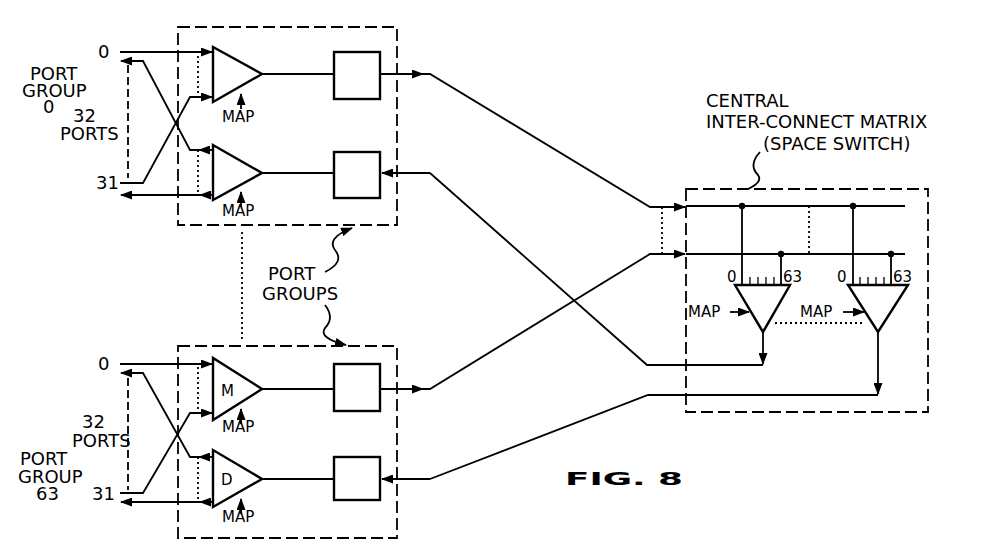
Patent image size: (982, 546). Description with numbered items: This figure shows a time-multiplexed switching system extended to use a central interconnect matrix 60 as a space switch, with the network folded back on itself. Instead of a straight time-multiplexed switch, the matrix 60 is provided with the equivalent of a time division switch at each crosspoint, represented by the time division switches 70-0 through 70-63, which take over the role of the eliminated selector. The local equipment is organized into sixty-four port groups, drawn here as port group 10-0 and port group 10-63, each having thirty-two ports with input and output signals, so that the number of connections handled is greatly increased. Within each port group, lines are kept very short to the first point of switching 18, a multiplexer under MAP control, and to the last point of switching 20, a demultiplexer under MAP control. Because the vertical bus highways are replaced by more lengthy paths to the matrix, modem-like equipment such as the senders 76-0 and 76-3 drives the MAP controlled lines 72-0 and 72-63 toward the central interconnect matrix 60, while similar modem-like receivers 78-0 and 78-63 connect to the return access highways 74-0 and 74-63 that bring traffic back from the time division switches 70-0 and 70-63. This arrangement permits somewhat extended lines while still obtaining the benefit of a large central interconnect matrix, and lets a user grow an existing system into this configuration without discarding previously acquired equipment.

The port group 10-0 is at (401, 51).
The port group 10-63 is at (230, 344).
The first point of switching 18 is at (232, 57).
The last point of switching 20 is at (232, 155).
The modem-like sender equipment 76-0 is at (335, 53).
The modem-like receiver element 78-0 is at (335, 152).
The modem-like sender equipment 76-3 is at (334, 377).
The modem-like receiver element 78-63 is at (334, 466).
The MAP controlled switch line 72-0 is at (540, 140).
The return access highway 74-0 is at (503, 239).
The MAP controlled switch line 72-63 is at (527, 328).
The return access highway 74-63 is at (574, 421).
The central interconnect matrix 60 is at (712, 188).
The time division switch 70-0 is at (769, 325).
The time division switch 70-63 is at (873, 323).